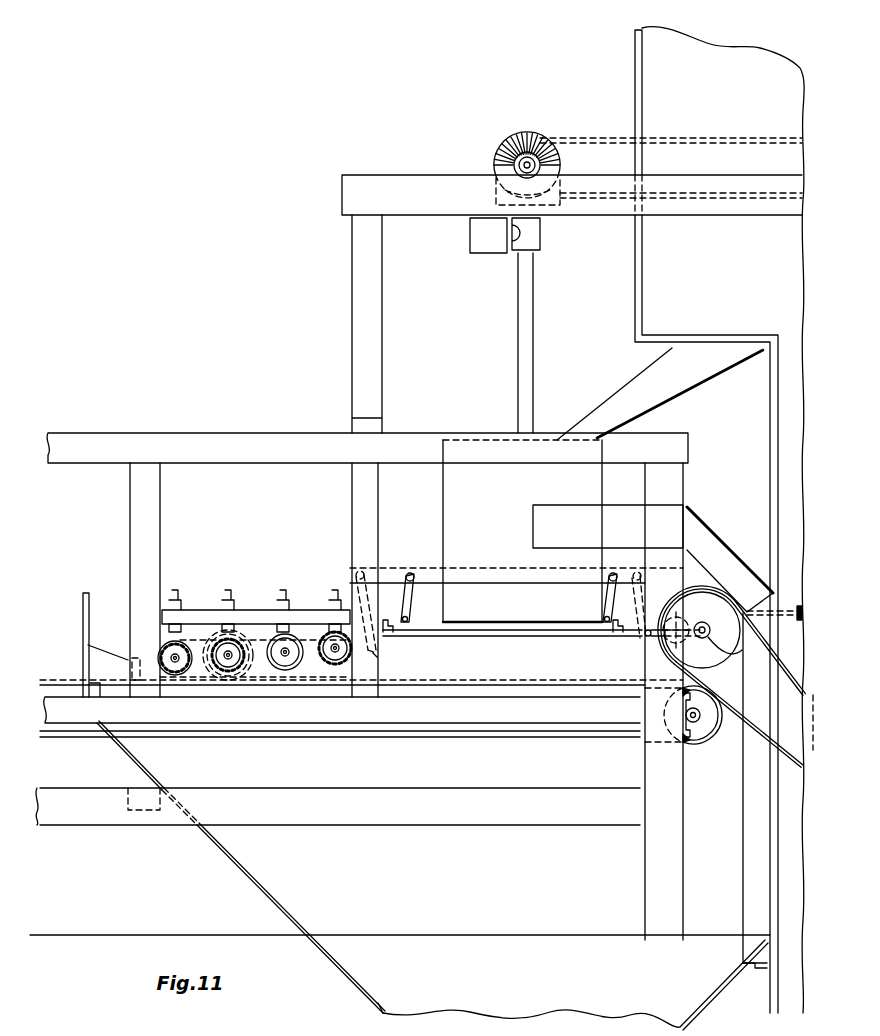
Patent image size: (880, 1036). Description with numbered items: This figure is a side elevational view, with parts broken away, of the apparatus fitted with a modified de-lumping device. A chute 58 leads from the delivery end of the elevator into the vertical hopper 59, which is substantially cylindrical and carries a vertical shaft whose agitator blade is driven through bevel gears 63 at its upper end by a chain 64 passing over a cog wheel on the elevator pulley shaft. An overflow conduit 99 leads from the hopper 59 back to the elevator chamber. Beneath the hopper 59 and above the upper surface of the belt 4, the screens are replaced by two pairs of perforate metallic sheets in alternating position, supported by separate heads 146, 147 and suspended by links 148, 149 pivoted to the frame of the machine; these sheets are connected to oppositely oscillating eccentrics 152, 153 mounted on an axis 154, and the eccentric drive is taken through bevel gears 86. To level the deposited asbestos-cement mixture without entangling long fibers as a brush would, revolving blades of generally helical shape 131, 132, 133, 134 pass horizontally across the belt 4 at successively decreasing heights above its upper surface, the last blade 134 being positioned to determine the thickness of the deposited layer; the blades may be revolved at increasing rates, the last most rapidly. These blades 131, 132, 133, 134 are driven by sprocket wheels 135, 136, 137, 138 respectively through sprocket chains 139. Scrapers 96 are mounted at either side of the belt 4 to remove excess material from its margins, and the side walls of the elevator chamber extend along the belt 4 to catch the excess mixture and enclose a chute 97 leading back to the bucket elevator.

The bevel gears 63 is at (538, 136).
The chain 64 is at (597, 137).
The chute 58 is at (690, 389).
The vertical hopper 59 is at (453, 482).
The belt 4 is at (493, 685).
The links 148 is at (415, 597).
The links 149 is at (382, 568).
The head 146 is at (397, 633).
The head 147 is at (374, 654).
The eccentric 153 is at (670, 644).
The axis 154 is at (712, 645).
The overflow conduit 99 is at (700, 520).
The eccentric 152 is at (710, 587).
The bevel gears 86 is at (740, 722).
The scraper 96 is at (100, 662).
The chute 97 is at (222, 858).
The helical blade 134 is at (180, 625).
The sprocket wheel 138 is at (175, 676).
The helical blade 133 is at (212, 630).
The sprocket wheel 136 is at (222, 680).
The sprocket wheel 137 is at (216, 685).
The helical blade 132 is at (272, 630).
The sprocket wheel 135 is at (304, 663).
The sprocket chains 139 is at (303, 668).
The helical blade 131 is at (318, 630).